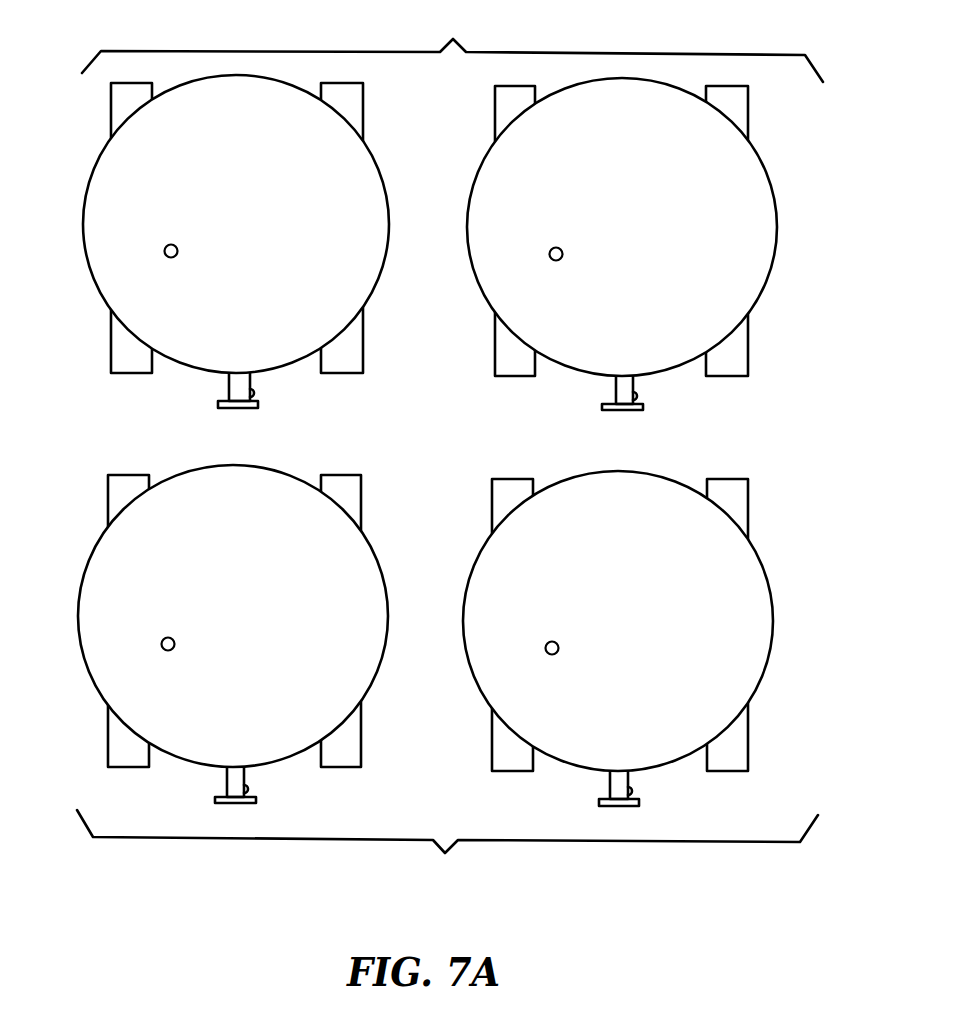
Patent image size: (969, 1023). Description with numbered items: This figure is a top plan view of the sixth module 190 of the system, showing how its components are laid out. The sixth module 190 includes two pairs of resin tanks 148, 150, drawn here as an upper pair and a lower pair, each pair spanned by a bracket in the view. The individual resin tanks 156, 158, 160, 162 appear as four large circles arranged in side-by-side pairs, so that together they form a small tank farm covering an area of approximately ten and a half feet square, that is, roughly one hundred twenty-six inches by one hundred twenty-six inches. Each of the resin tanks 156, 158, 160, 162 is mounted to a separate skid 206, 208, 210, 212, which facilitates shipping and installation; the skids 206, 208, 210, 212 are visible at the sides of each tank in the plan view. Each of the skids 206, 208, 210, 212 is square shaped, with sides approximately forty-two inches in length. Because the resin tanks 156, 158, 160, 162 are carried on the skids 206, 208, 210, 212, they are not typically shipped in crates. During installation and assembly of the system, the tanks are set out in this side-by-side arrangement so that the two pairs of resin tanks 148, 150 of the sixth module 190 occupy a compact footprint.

The pair of resin tanks 148 is at (452, 48).
The pair of resin tanks 150 is at (447, 846).
The sixth module 190 is at (96, 127).
The resin tank 156 is at (364, 182).
The resin tank 158 is at (752, 187).
The resin tank 160 is at (360, 577).
The resin tank 162 is at (748, 580).
The skid 206 is at (347, 104).
The skid 208 is at (733, 106).
The skid 210 is at (343, 497).
The skid 212 is at (729, 500).